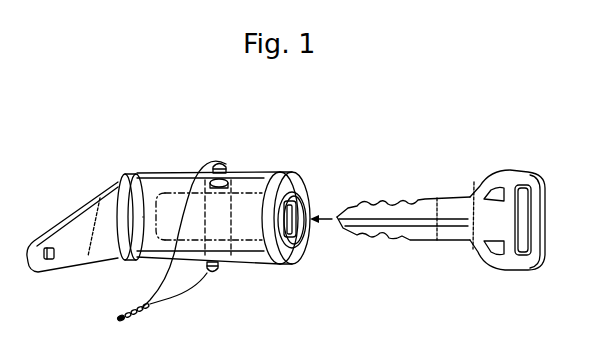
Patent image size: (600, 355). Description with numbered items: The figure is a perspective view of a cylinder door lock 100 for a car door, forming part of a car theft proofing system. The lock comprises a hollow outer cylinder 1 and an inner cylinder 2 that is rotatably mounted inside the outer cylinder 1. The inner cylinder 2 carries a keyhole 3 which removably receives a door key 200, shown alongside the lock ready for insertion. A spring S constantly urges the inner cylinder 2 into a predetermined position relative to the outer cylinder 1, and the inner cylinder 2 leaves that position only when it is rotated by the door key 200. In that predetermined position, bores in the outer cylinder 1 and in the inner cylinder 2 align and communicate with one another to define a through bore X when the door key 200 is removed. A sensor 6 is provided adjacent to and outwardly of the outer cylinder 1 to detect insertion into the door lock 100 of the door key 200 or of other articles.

The cylinder door lock 100 is at (177, 153).
The outer cylinder 1 is at (297, 173).
The inner cylinder 2 is at (298, 207).
The keyhole 3 is at (297, 243).
The sensor 6 is at (226, 166).
The spring S is at (134, 170).
The through bore X is at (234, 266).
The door key 200 is at (473, 200).